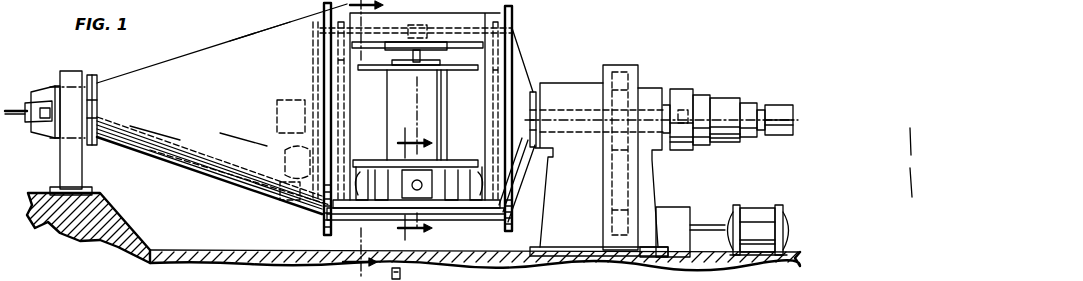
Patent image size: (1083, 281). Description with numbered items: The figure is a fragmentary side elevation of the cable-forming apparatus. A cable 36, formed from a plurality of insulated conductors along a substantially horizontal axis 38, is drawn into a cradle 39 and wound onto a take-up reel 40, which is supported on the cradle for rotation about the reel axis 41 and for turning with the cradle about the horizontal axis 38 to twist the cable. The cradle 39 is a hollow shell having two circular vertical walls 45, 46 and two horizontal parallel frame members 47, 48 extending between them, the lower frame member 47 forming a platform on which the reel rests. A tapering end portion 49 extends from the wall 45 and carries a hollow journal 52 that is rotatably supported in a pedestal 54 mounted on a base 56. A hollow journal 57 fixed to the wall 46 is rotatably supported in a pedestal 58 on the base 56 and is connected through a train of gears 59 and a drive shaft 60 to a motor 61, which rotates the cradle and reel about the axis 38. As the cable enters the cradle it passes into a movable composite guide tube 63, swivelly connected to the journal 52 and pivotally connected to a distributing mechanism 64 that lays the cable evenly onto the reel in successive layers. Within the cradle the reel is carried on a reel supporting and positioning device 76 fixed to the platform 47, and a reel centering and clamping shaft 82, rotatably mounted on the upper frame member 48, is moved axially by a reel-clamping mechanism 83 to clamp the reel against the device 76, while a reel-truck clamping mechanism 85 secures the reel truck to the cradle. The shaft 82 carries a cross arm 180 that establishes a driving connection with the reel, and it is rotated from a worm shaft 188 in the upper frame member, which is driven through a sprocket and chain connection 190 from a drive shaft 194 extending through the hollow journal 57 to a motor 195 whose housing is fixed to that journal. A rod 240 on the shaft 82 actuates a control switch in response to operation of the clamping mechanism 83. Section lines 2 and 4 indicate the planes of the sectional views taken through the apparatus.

The section line 2- 2 is at (353, 139).
The section line 4- 4 is at (415, 188).
The cable 36 is at (15, 116).
The horizontal axis 38 is at (8, 110).
The cradle 39 is at (261, 31).
The take-up reel 40 is at (436, 108).
The reel axis 41 is at (417, 118).
The wall 45 is at (310, 215).
The wall 46 is at (513, 14).
The lower frame member 47 is at (450, 210).
The upper frame member 48 is at (448, 22).
The tapering end portion 49 is at (177, 60).
The hollow journal 52 is at (71, 82).
The pedestal 54 is at (80, 168).
The base 56 is at (35, 192).
The hollow journal 57 is at (577, 108).
The pedestal 58 is at (581, 247).
The train of gears 59 is at (642, 182).
The drive shaft 60 is at (705, 222).
The motor 61 is at (750, 207).
The composite guide tube 63 is at (186, 136).
The distributing mechanism 64 is at (354, 107).
The reel supporting and positioning device 76 is at (410, 200).
The reel centering and clamping shaft 82 is at (410, 50).
The reel-clamping mechanism 83 is at (400, 30).
The reel-truck clamping mechanism 85 is at (480, 186).
The cross arm 180 is at (435, 62).
The shaft 188 is at (518, 46).
The sprocket and chain connection 190 is at (515, 68).
The drive shaft 194 is at (556, 118).
The motor 195 is at (722, 96).
The rod 240 is at (440, 275).